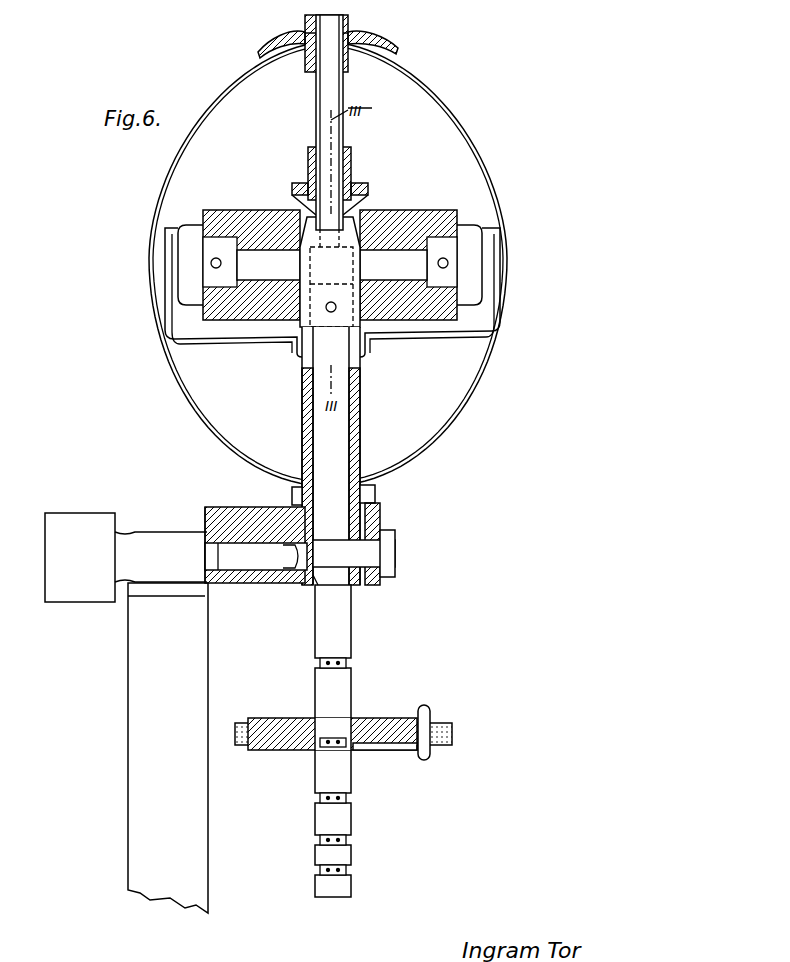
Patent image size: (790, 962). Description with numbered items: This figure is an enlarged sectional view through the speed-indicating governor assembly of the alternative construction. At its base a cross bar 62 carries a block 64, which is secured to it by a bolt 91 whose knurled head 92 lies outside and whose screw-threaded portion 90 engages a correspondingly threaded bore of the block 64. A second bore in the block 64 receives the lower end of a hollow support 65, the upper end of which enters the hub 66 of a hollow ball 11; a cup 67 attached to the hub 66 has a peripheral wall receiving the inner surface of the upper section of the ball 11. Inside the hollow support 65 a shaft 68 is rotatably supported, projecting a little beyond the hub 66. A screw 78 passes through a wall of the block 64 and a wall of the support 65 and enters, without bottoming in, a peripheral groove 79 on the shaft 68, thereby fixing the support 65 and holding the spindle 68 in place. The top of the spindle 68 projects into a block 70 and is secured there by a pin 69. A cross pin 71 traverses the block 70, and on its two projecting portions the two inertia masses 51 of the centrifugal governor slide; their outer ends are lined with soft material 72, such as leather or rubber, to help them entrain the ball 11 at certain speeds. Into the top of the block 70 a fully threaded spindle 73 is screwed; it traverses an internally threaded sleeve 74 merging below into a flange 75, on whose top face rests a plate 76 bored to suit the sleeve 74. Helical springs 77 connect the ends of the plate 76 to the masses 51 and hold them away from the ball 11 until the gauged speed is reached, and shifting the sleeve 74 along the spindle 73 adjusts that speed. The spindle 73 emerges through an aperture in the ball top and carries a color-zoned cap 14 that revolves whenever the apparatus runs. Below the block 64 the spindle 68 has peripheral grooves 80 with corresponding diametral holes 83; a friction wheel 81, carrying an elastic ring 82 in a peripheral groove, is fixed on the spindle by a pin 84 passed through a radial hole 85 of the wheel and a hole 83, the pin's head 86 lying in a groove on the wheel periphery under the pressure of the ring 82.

The hollow ball 11 is at (431, 80).
The cap 14 is at (390, 52).
The inertia masses 51 is at (250, 214).
The cross bar 62 is at (209, 530).
The block 64 is at (262, 584).
The hollow support 65 is at (372, 525).
The hub 66 is at (301, 383).
The cup 67 is at (492, 301).
The shaft 68 is at (340, 430).
The pin 69 is at (331, 313).
The block 70 is at (330, 271).
The cross pin 71 is at (292, 268).
The soft material 72 is at (463, 222).
The spindle 73 is at (316, 97).
The sleeve 74 is at (351, 157).
The flange 75 is at (357, 192).
The plate 76 is at (298, 183).
The helical springs 77 is at (353, 207).
The screw 78 is at (372, 551).
The peripheral groove 79 is at (315, 592).
The peripheral grooves 80 is at (350, 663).
The friction wheel 81 is at (284, 750).
The ring 82 is at (452, 731).
The diametral holes 83 is at (320, 840).
The pin 84 is at (368, 752).
The radial hole 85 is at (405, 752).
The head 86 is at (426, 708).
The screw-threaded portion 90 is at (232, 533).
The bolt 91 is at (134, 543).
The knurled head 92 is at (86, 594).